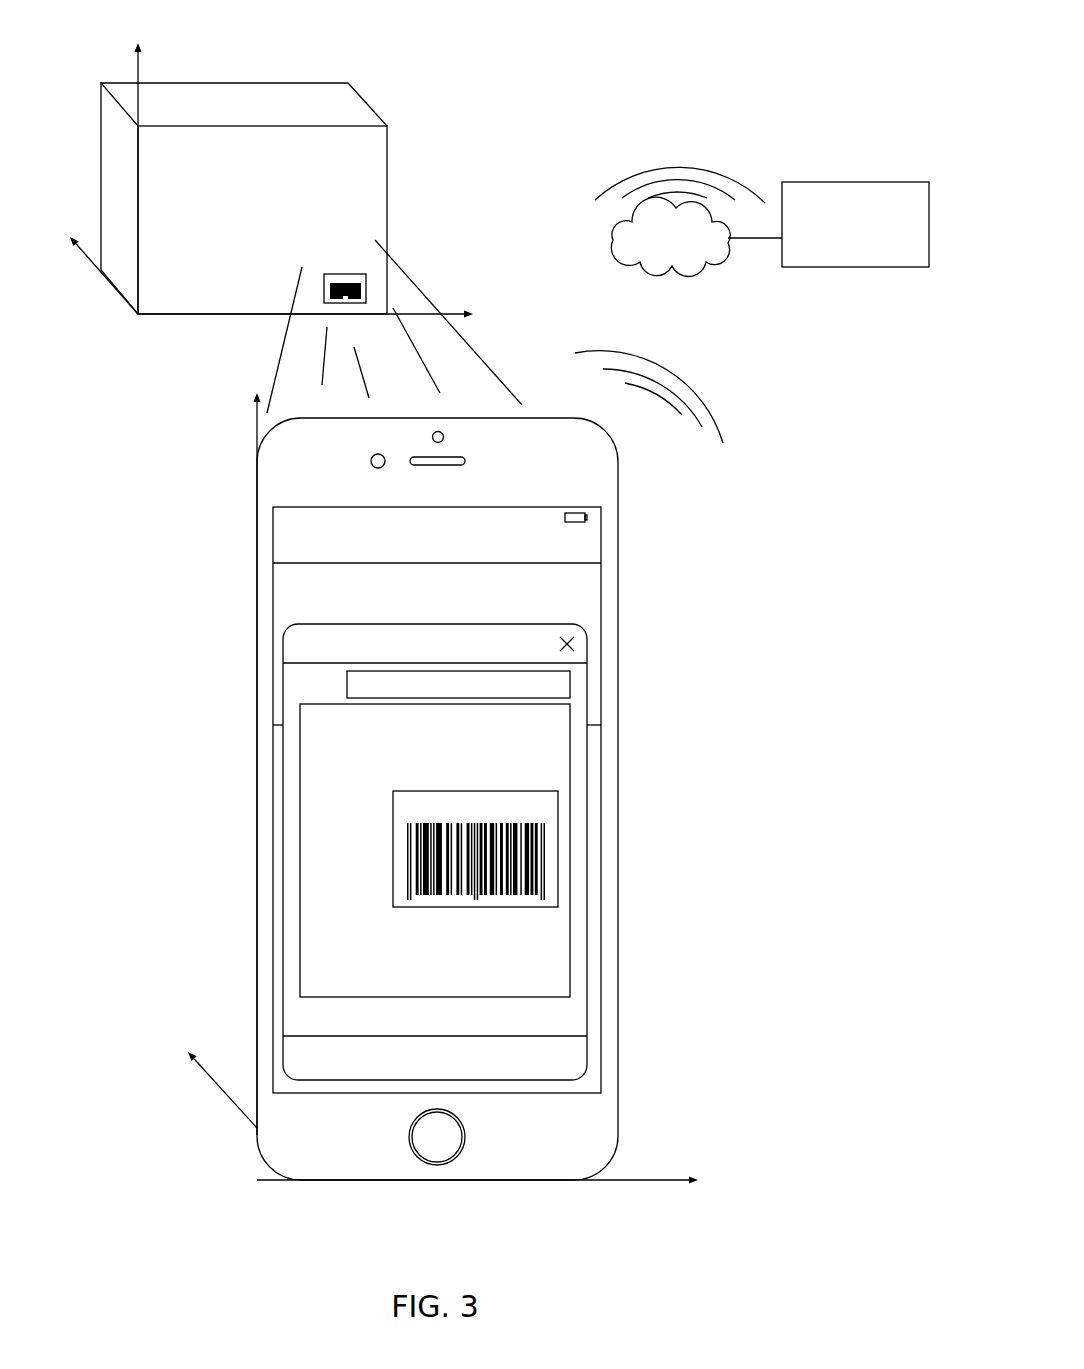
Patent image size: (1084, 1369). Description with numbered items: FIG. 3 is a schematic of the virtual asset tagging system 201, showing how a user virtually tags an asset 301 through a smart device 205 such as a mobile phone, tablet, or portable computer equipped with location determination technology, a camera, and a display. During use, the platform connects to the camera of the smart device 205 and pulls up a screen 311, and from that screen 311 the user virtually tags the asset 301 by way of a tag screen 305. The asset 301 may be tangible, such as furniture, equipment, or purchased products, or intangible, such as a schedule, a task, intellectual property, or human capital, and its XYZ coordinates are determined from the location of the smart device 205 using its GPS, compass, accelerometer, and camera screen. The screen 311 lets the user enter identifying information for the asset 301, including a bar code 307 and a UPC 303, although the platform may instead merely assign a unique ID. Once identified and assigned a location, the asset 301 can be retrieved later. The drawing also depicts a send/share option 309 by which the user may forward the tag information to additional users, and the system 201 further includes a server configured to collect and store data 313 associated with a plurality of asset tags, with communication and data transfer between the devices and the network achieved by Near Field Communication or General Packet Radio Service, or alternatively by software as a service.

The system 201 is at (735, 89).
The smart device 205 is at (257, 800).
The asset 301 is at (387, 200).
The UPC 303 is at (581, 679).
The tag screen 305 is at (600, 810).
The bar code 307 is at (556, 856).
The send/share option 309 is at (591, 1050).
The screen 311 is at (670, 268).
The data 313 is at (855, 182).